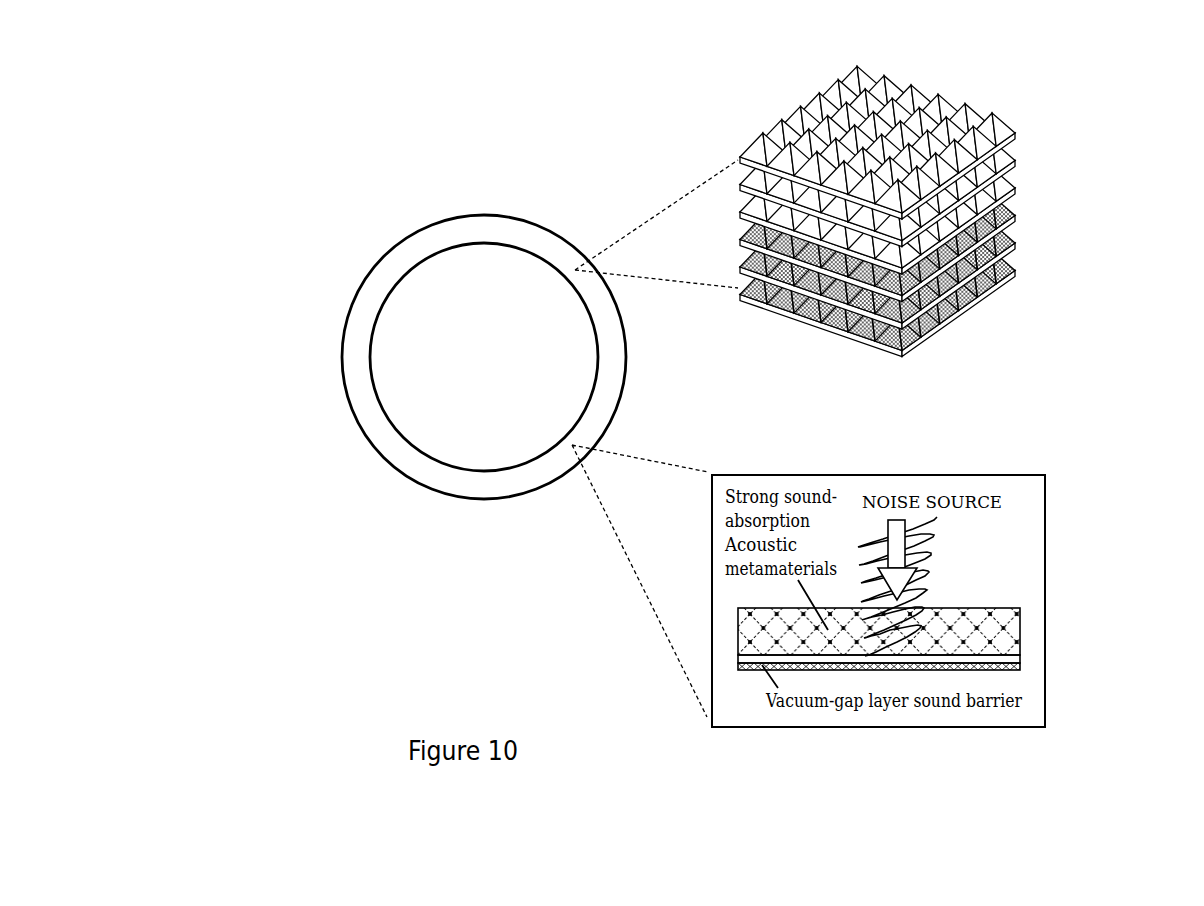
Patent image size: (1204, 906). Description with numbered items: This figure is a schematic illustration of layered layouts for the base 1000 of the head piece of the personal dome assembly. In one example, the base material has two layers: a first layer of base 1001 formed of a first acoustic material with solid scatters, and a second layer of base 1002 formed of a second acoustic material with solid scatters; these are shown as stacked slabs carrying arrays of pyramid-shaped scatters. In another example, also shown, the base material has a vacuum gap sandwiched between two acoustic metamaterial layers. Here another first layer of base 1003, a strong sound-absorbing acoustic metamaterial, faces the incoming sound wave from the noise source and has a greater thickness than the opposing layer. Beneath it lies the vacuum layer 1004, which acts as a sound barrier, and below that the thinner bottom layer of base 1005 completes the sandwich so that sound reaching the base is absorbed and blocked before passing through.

The base 1000 is at (510, 232).
The first layer of base 1001 is at (1018, 123).
The second layer of base 1002 is at (1010, 277).
The another first layer of base 1003 is at (992, 608).
The vacuum layer 1004 is at (995, 667).
The bottom layer of base 1005 is at (1005, 668).